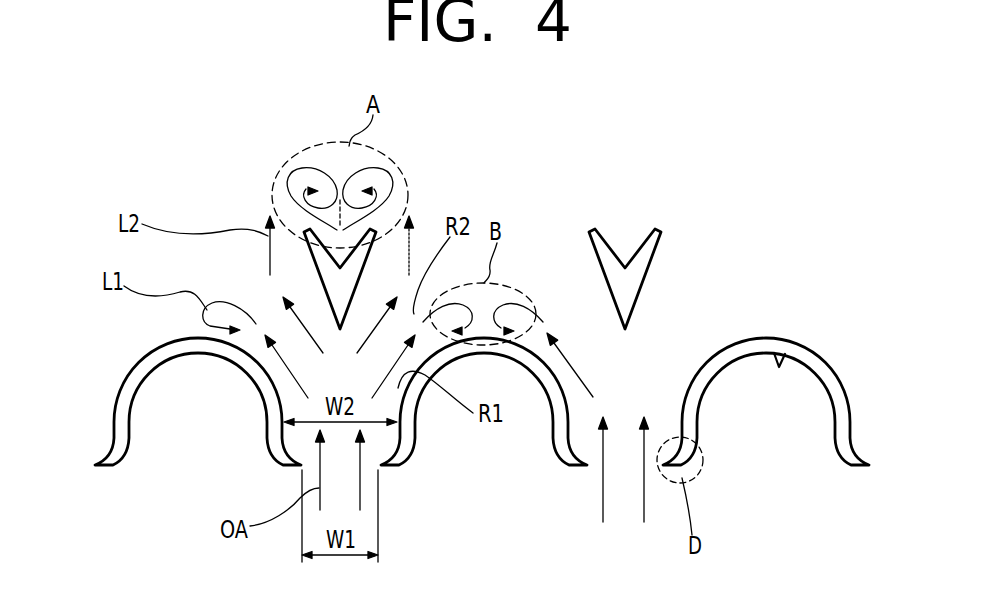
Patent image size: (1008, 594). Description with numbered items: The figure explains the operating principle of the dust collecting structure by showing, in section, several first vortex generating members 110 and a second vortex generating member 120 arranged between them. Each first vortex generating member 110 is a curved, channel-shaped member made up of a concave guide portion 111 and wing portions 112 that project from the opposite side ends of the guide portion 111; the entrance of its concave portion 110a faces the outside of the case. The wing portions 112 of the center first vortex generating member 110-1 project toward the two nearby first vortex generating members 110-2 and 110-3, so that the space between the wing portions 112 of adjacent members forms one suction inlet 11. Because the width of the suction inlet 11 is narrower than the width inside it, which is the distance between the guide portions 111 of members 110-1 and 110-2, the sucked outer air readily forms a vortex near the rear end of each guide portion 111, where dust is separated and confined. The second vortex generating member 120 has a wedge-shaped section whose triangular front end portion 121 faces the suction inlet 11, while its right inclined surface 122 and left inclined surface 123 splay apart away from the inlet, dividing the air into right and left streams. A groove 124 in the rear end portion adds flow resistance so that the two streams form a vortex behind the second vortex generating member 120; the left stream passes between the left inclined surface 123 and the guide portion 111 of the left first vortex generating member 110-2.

The suction inlet 11 is at (345, 465).
The first vortex generating member 110 is at (140, 372).
The center first vortex generating member 110-1 is at (402, 448).
The left first vortex generating member 110-2 is at (268, 440).
The first vortex generating member 110-3 is at (697, 420).
The concave portion 110a is at (790, 352).
The guide portion 111 is at (402, 383).
The wing portion 112 is at (678, 475).
The second vortex generating member 120 is at (318, 272).
The front end portion 121 is at (628, 342).
The right inclined surface 122 is at (366, 270).
The left inclined surface 123 is at (283, 296).
The groove 124 is at (637, 240).